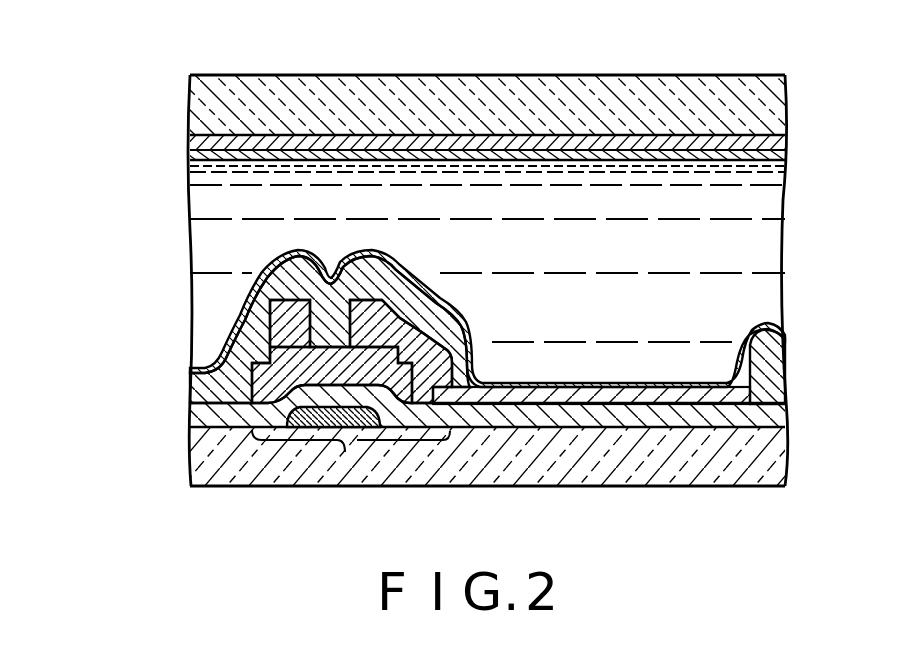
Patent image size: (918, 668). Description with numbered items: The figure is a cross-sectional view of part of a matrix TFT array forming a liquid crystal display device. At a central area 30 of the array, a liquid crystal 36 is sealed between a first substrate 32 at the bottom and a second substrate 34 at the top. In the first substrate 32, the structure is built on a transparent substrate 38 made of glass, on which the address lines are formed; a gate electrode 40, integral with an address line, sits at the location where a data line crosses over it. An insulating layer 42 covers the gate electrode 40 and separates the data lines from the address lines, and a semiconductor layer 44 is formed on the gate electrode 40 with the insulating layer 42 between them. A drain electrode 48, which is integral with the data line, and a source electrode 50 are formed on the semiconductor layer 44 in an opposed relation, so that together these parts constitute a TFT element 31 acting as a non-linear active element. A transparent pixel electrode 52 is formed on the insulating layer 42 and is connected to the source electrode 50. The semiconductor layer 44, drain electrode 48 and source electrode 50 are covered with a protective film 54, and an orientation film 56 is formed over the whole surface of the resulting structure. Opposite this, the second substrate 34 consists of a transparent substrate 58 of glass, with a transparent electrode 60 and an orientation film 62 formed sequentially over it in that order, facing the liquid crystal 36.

The central area 30 is at (650, 509).
The TFT element 31 is at (345, 452).
The first substrate 32 is at (183, 503).
The second substrate 34 is at (161, 84).
The liquid crystal 36 is at (202, 193).
The transparent substrate 38 is at (218, 453).
The gate electrode 40 is at (357, 412).
The insulating layer 42 is at (213, 420).
The semiconductor layer 44 is at (262, 382).
The drain electrode 48 is at (275, 322).
The source electrode 50 is at (385, 303).
The transparent pixel electrode 52 is at (575, 395).
The protective film 54 is at (340, 268).
The orientation film 56 is at (253, 275).
The transparent substrate 58 is at (302, 100).
The transparent electrode 60 is at (190, 139).
The orientation film 62 is at (193, 153).